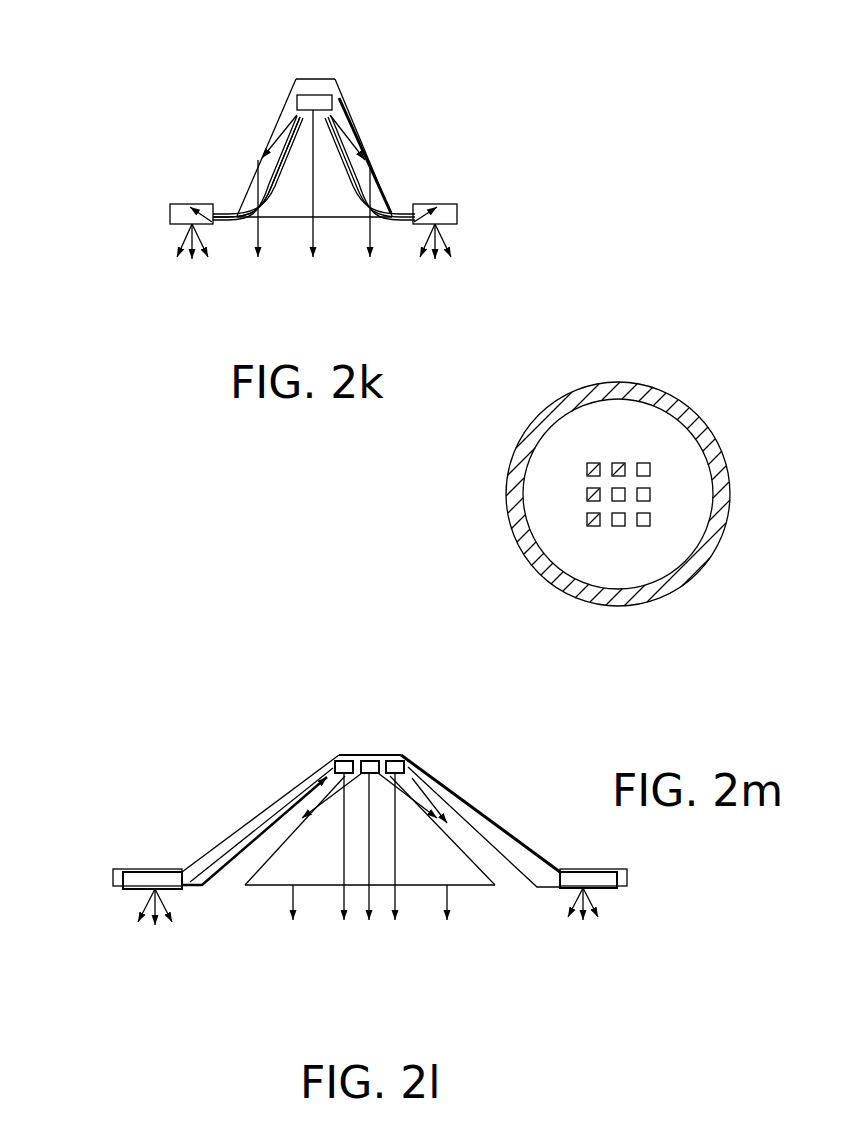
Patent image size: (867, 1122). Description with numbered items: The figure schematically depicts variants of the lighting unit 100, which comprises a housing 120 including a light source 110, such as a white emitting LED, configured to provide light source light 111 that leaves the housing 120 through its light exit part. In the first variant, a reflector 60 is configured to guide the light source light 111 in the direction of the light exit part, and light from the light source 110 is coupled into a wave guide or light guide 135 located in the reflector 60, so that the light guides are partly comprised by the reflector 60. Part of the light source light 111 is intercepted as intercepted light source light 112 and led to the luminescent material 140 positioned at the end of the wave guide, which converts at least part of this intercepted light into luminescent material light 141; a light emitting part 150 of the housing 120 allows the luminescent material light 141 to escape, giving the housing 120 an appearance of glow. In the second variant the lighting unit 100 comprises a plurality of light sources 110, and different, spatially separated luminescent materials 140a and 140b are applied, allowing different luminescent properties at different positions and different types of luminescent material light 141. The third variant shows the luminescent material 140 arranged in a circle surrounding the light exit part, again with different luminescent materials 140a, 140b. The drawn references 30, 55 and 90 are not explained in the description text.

In FIG. 2k, the lighting unit 100 is at (122, 127).
In FIG. 2m, the lighting unit 100 is at (705, 585).
In FIG. 2l, the lighting unit 100 is at (272, 725).
In FIG. 2k, the housing 120 is at (380, 123).
In FIG. 2m, the housing 120 is at (572, 602).
In FIG. 2l, the housing 120 is at (247, 792).
In FIG. 2k, the light source module 30 is at (342, 100).
In FIG. 2l, the light source module 30 is at (330, 747).
In FIG. 2k, the light source 110 is at (313, 95).
In FIG. 2m, the light source 110 is at (593, 463).
In FIG. 2l, the light source 110 is at (397, 757).
In FIG. 2k, the reflector 60 is at (287, 117).
In FIG. 2m, the reflector 60 is at (608, 573).
In FIG. 2k, the light guide 135 is at (272, 140).
In FIG. 2l, the light guide 135 is at (442, 783).
In FIG. 2k, the intercepted light source light 112 is at (278, 190).
In FIG. 2l, the intercepted light source light 112 is at (303, 787).
In FIG. 2k, the luminescent material 140 is at (170, 208).
In FIG. 2m, the first luminescent material 140a is at (597, 603).
In FIG. 2l, the first luminescent material 140a is at (133, 890).
In FIG. 2l, the second luminescent material 140b is at (563, 890).
In FIG. 2k, the light emitting part 150 is at (173, 225).
In FIG. 2m, the light emitting part 150 is at (678, 597).
In FIG. 2l, the light emitting part 150 is at (142, 892).
In FIG. 2k, the luminescent material light 141 is at (178, 236).
In FIG. 2l, the luminescent material light 141 is at (168, 902).
In FIG. 2k, the light source light 111 is at (368, 233).
In FIG. 2l, the light source light 111 is at (450, 890).
In FIG. 2k, the illuminated area 55 is at (338, 233).
In FIG. 2m, the illuminated area 55 is at (668, 443).
In FIG. 2l, the illuminated area 55 is at (380, 920).
In FIG. 2l, the mounting bracket 90 is at (130, 883).